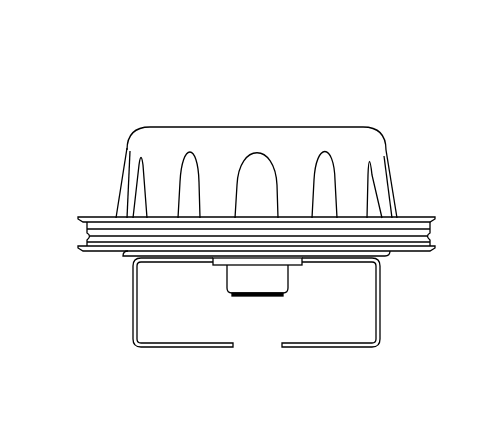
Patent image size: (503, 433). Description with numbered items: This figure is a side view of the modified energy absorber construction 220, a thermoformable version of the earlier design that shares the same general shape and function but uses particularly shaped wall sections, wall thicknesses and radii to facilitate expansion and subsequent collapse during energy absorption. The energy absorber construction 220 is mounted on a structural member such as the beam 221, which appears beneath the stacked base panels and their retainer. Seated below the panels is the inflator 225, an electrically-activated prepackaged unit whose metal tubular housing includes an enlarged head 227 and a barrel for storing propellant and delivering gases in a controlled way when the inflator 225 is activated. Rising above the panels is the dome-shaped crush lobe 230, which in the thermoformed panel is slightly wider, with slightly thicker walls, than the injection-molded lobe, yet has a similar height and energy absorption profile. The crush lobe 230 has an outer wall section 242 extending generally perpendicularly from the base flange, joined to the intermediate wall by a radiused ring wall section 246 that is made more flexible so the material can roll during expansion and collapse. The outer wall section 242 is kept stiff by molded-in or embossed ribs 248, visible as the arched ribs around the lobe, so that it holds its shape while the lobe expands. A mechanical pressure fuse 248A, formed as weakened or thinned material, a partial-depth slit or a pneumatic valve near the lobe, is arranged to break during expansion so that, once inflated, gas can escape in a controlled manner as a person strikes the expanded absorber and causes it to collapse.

The energy absorber construction 220 is at (410, 124).
The beam 221 is at (383, 307).
The inflator 225 is at (222, 278).
The enlarged head 227 is at (275, 278).
The crush lobe 230 is at (337, 127).
The outer wall section 242 is at (159, 141).
The radiused ring wall section 246 is at (133, 136).
The ribs 248 is at (193, 197).
The mechanical pressure fuse 248A is at (185, 147).